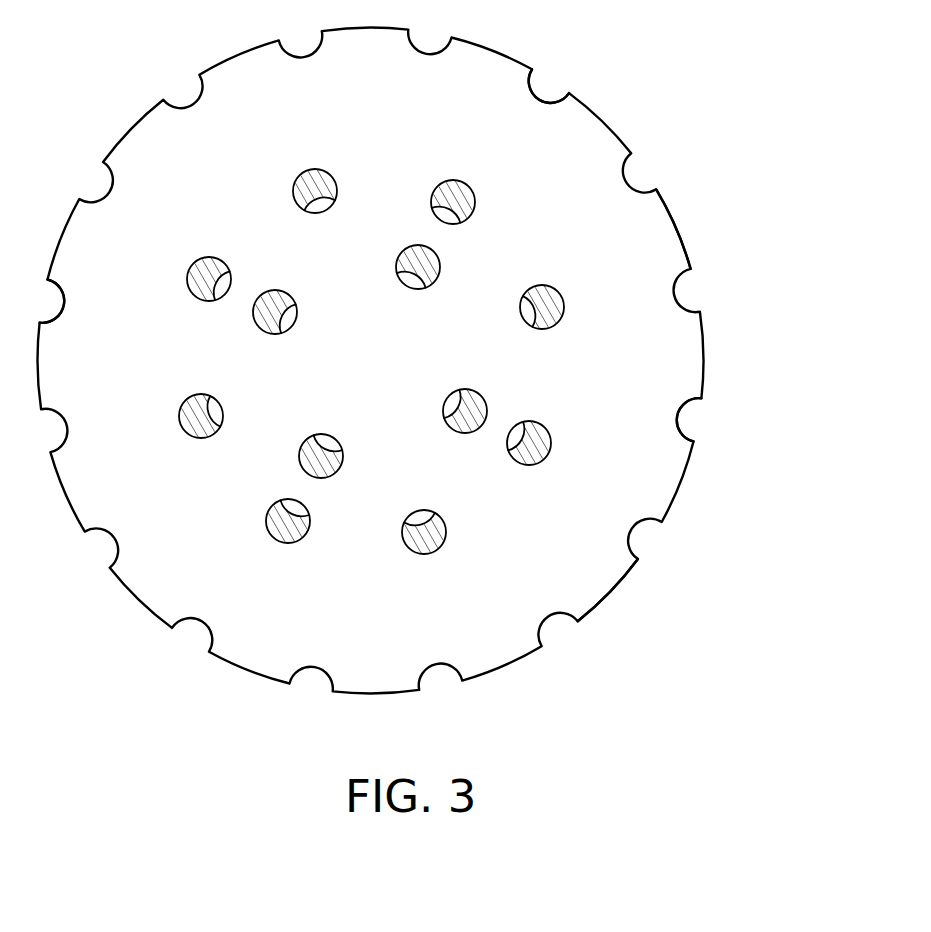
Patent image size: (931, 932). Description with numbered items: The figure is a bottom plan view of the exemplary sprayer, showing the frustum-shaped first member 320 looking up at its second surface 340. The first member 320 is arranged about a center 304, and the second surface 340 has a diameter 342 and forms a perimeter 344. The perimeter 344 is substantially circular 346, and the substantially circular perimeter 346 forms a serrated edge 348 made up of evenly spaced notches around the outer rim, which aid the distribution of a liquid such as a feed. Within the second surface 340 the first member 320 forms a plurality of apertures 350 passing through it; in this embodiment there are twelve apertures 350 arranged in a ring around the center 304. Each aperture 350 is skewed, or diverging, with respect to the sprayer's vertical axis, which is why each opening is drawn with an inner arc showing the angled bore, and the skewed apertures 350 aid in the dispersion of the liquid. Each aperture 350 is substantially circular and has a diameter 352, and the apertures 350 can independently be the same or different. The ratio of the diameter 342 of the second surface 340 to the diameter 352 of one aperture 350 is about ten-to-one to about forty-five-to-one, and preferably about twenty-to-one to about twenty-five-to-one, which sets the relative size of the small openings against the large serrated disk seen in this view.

The center 304 is at (403, 352).
The first member 320 is at (406, 655).
The second surface 340 is at (590, 517).
The diameter 342 is at (686, 420).
The perimeter 344 is at (652, 640).
The substantially circular perimeter 346 is at (691, 138).
The serrated edge 348 is at (533, 74).
The aperture 350 is at (664, 488).
The diameter 352 is at (355, 233).